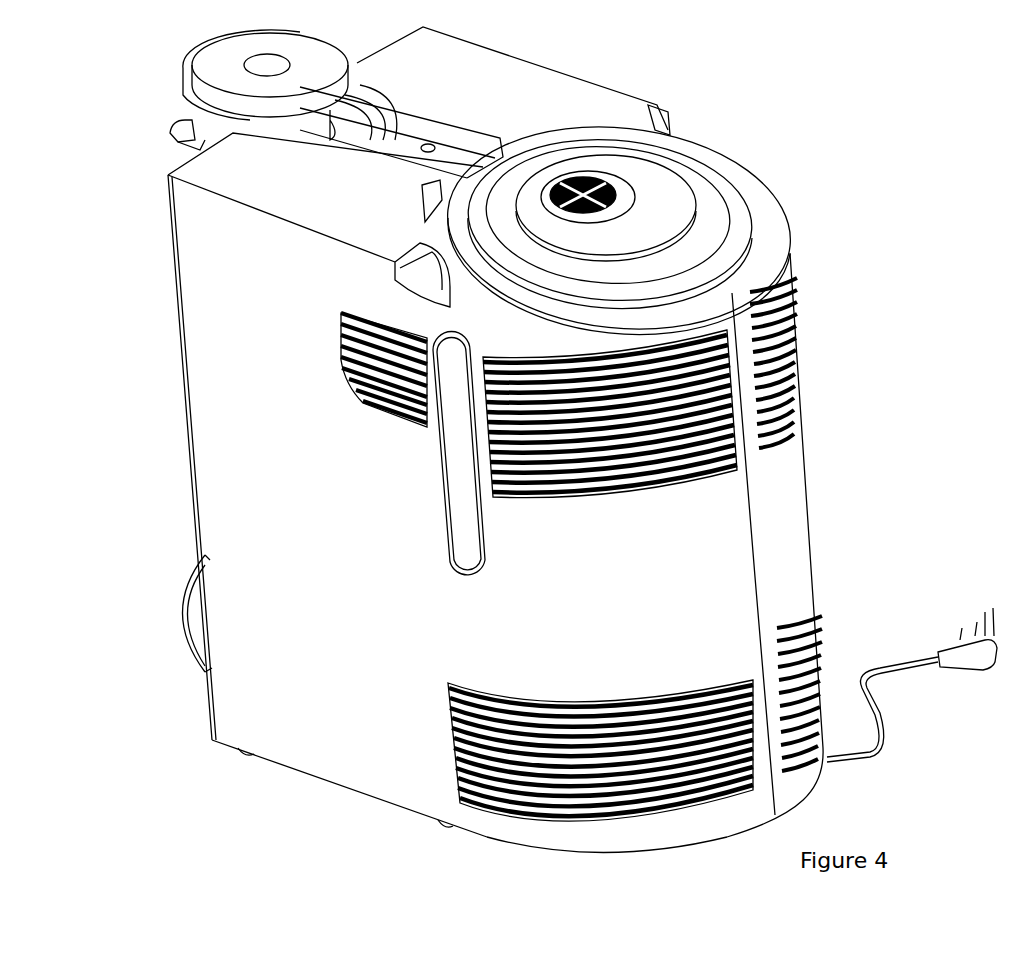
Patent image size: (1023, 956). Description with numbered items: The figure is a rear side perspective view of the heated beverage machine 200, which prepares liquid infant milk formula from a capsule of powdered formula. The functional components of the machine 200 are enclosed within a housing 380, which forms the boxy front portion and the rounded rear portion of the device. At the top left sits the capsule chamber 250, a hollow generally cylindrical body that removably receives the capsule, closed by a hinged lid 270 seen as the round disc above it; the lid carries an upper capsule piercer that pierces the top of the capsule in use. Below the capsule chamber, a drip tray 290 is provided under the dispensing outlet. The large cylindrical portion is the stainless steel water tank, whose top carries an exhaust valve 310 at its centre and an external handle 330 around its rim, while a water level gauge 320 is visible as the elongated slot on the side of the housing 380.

The heated beverage machine 200 is at (925, 130).
The capsule chamber 250 is at (192, 145).
The hinged lid 270 is at (190, 76).
The drip tray 290 is at (170, 645).
The exhaust valve 310 is at (600, 180).
The water level gauge 320 is at (445, 548).
The external handle 330 is at (745, 143).
The housing 380 is at (365, 750).